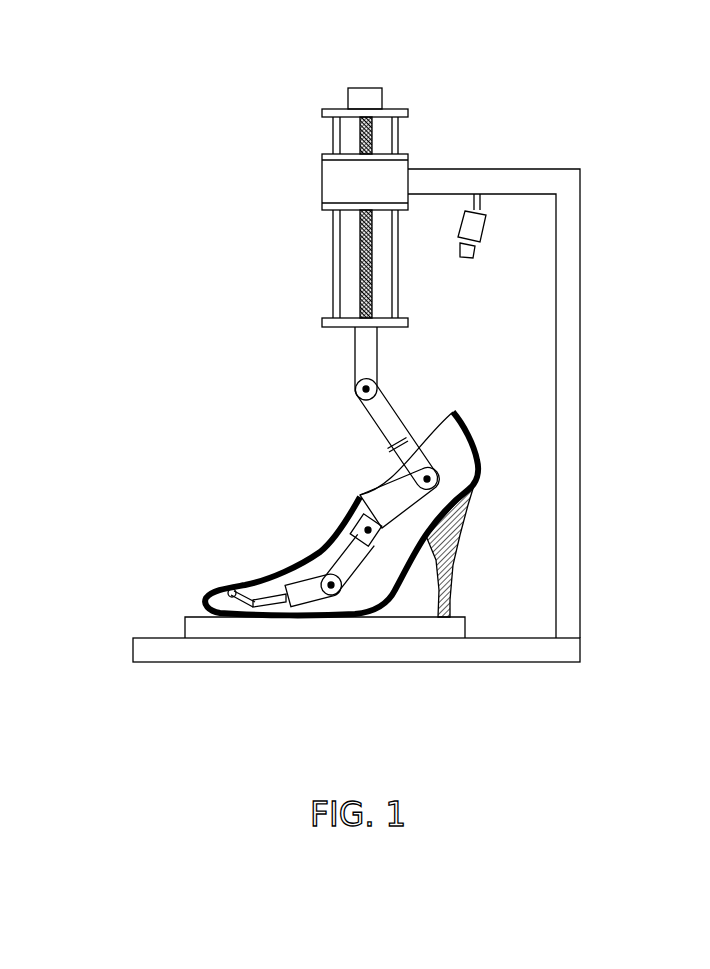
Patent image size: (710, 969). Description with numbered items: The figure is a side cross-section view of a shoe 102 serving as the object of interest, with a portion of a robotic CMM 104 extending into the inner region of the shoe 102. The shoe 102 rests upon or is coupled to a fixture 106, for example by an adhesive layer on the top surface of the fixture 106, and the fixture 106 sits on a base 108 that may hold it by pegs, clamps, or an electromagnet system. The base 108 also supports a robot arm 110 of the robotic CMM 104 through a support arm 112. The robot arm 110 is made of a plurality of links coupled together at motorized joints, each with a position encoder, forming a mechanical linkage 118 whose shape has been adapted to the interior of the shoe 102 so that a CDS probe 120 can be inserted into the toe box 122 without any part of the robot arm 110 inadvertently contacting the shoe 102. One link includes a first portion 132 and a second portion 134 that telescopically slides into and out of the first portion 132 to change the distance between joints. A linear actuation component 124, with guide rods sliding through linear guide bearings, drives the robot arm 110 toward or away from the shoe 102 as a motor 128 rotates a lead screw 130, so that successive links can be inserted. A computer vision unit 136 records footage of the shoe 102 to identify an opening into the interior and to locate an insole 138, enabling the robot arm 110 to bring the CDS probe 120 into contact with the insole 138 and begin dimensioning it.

The shoe 102 is at (457, 428).
The robotic CMM 104 is at (222, 80).
The fixture 106 is at (468, 616).
The base 108 is at (582, 641).
The robot arm 110 is at (258, 327).
The support arm 112 is at (428, 170).
The mechanical linkage 118 is at (290, 471).
The CDS probe 120 is at (230, 589).
The toe box 122 is at (182, 598).
The linear actuation component 124 is at (303, 183).
The motor 128 is at (383, 88).
The lead screw 130 is at (372, 137).
The first portion 132 is at (392, 403).
The second portion 134 is at (404, 452).
The computer vision unit 136 is at (483, 230).
The insole 138 is at (383, 558).